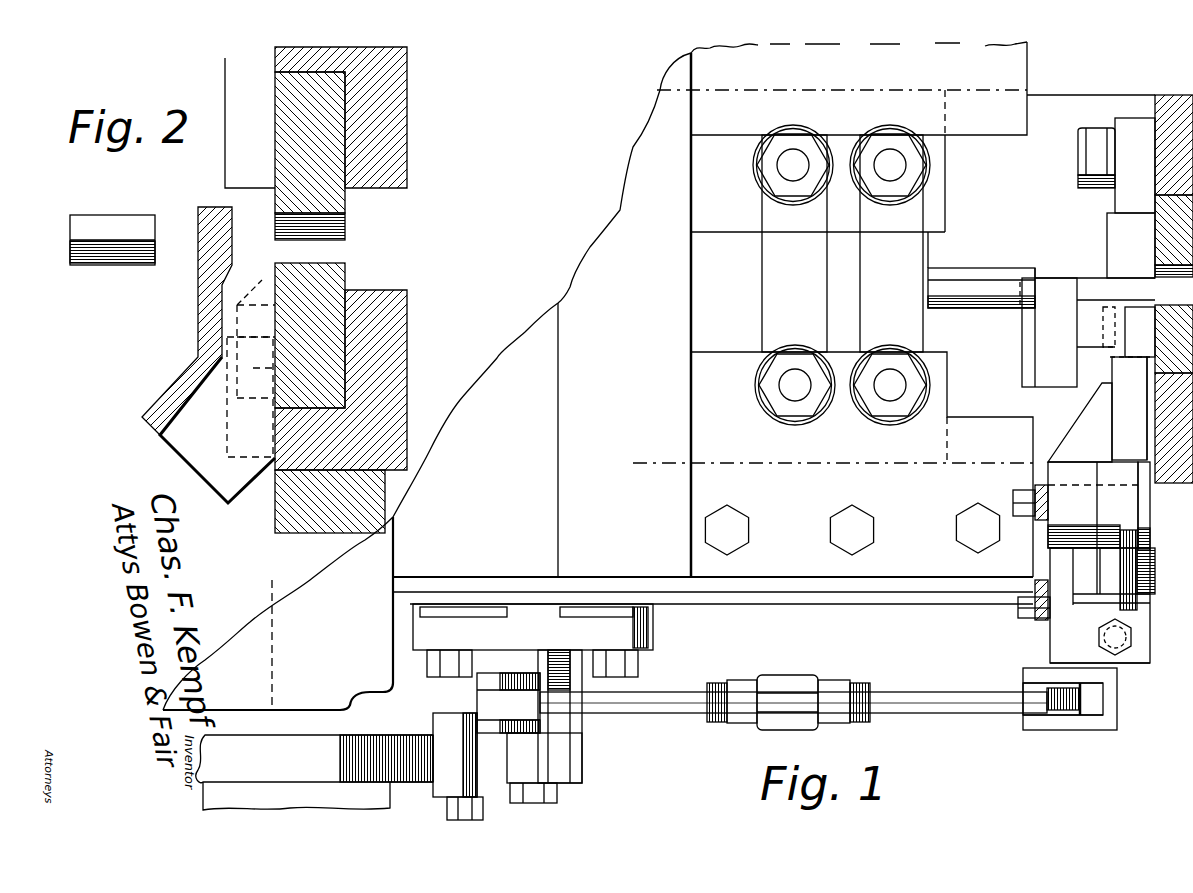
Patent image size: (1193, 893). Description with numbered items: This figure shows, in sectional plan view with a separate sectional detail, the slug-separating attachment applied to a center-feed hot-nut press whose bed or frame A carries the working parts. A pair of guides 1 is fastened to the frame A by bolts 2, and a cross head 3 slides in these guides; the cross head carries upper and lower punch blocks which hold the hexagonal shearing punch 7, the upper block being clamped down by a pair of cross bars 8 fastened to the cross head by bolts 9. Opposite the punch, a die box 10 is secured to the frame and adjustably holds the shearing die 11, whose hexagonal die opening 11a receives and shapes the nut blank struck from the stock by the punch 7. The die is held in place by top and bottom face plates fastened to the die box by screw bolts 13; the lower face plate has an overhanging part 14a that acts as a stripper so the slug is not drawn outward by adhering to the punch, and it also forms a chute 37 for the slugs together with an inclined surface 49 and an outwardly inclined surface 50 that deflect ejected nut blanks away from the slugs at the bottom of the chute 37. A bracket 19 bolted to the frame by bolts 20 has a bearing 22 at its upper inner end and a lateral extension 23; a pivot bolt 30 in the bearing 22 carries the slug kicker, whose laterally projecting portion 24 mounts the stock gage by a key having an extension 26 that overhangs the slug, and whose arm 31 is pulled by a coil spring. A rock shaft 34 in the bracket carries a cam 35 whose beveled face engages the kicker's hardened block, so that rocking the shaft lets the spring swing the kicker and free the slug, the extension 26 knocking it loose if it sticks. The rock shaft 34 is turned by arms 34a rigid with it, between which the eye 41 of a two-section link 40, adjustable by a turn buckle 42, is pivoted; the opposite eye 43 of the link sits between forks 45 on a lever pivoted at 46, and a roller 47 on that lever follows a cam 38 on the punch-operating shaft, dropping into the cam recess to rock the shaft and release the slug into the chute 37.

In FIG. 1, the guides 1 is at (833, 464).
In FIG. 1, the bolts 2 is at (738, 530).
In FIG. 1, the cross head 3 is at (818, 215).
In FIG. 2, the shearing punch 7 is at (135, 262).
In FIG. 1, the shearing punch 7 is at (960, 290).
In FIG. 1, the cross bars 8 is at (853, 221).
In FIG. 1, the bolts 9 is at (780, 165).
In FIG. 2, the die box 10 is at (390, 332).
In FIG. 1, the die box 10 is at (1165, 155).
In FIG. 2, the shearing die 11 is at (292, 155).
In FIG. 1, the shearing die 11 is at (1165, 213).
In FIG. 2, the hexagonal die opening 11a is at (345, 228).
In FIG. 1, the hexagonal die opening 11a is at (1152, 268).
In FIG. 2, the screw bolts 13 is at (215, 383).
In FIG. 1, the screw bolts 13 is at (1085, 162).
In FIG. 2, the overhanging part 14a is at (195, 213).
In FIG. 1, the overhanging part 14a is at (1090, 328).
In FIG. 1, the bracket 19 is at (1145, 627).
In FIG. 1, the bolts 20 is at (1120, 650).
In FIG. 1, the bearing 22 is at (1075, 505).
In FIG. 1, the lateral extension 23 is at (1080, 422).
In FIG. 1, the laterally projecting portion 24 is at (1133, 408).
In FIG. 1, the extension 26 is at (1140, 332).
In FIG. 1, the pivot bolt 30 is at (1150, 505).
In FIG. 1, the arm 31 is at (1130, 565).
In FIG. 1, the rock shaft 34 is at (1090, 733).
In FIG. 1, the arms 34a is at (1030, 673).
In FIG. 1, the cam 35 is at (1150, 580).
In FIG. 2, the chute 37 is at (220, 295).
In FIG. 1, the chute 37 is at (1105, 352).
In FIG. 1, the cam 38 is at (314, 772).
In FIG. 1, the link 40 is at (936, 694).
In FIG. 1, the eye 41 is at (1040, 700).
In FIG. 1, the turn buckle 42 is at (795, 676).
In FIG. 1, the eye 43 is at (488, 703).
In FIG. 1, the forks 45 is at (583, 752).
In FIG. 1, the pivot 46 is at (533, 647).
In FIG. 1, the roller 47 is at (433, 740).
In FIG. 1, the inclined surface 49 is at (1093, 288).
In FIG. 2, the outwardly inclined surface 50 is at (268, 290).
In FIG. 1, the outwardly inclined surface 50 is at (1115, 228).
In FIG. 2, the bed or frame A is at (275, 515).
In FIG. 1, the bed or frame A is at (678, 376).